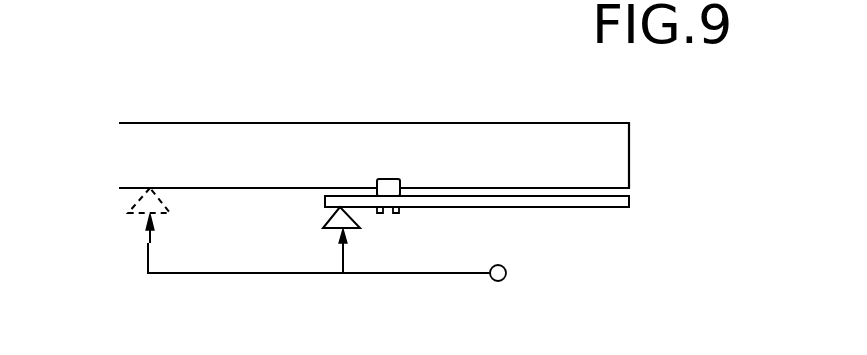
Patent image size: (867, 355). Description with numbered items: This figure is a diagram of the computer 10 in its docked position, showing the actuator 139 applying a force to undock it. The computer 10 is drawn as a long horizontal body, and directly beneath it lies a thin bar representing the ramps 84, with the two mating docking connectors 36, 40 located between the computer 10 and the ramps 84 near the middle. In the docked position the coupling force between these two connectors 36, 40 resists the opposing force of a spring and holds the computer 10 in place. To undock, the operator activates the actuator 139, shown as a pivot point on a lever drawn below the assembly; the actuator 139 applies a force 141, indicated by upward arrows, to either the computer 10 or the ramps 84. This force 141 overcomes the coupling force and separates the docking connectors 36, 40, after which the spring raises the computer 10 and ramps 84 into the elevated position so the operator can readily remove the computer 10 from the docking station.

The computer 10 is at (498, 140).
The docking connector 36 is at (395, 178).
The ramps 84 is at (583, 207).
The docking connector 40 is at (398, 212).
The actuator 139 is at (506, 273).
The force 141 is at (343, 252).